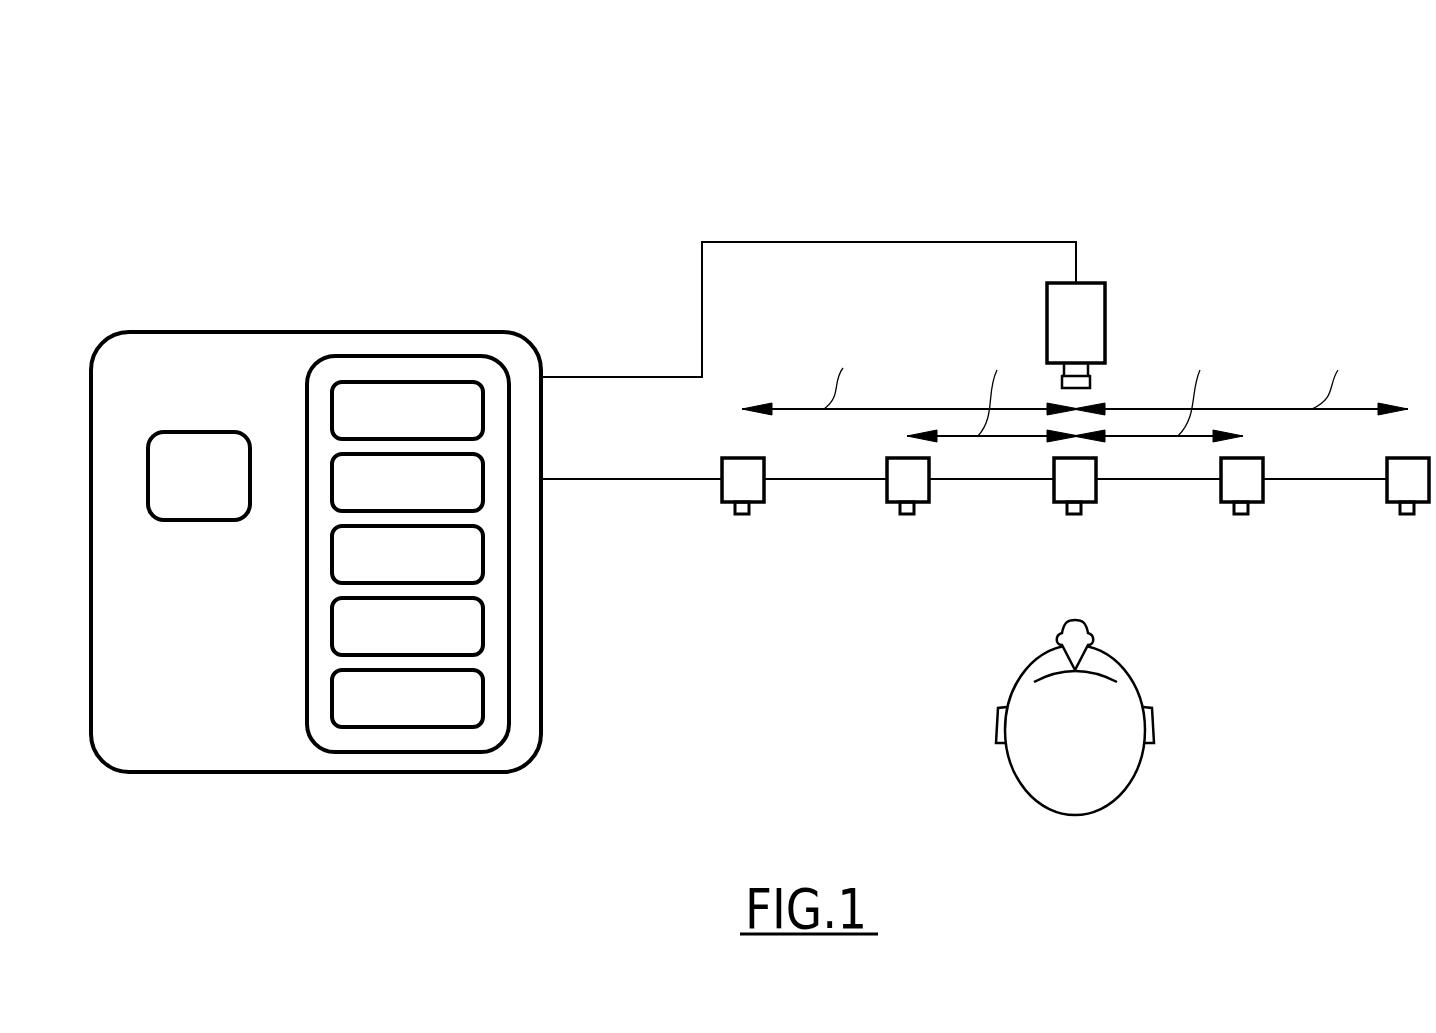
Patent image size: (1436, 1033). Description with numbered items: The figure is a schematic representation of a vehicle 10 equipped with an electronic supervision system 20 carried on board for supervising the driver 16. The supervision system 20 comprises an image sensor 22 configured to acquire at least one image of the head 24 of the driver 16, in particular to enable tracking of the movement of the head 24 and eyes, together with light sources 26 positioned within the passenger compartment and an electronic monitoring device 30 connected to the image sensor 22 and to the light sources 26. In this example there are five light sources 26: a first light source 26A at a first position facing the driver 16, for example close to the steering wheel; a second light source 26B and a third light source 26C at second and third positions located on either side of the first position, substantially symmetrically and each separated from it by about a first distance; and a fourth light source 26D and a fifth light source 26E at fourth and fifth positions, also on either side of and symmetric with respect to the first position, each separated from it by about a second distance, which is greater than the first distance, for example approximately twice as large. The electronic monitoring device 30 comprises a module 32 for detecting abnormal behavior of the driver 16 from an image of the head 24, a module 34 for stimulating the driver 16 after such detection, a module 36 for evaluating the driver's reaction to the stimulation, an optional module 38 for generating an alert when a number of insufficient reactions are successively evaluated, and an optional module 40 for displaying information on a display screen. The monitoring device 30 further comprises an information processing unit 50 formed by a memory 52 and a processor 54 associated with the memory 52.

The vehicle 10 is at (1282, 128).
The driver 16 is at (1110, 840).
The electronic supervision system 20 is at (1306, 284).
The image sensor 22 is at (1083, 320).
The head 24 is at (1107, 762).
The light source 26 is at (1374, 527).
The first light source 26A is at (1066, 485).
The second light source 26B is at (900, 485).
The third light source 26C is at (1232, 485).
The fourth light source 26D is at (733, 485).
The fifth light source 26E is at (1398, 485).
The electronic monitoring device 30 is at (431, 291).
The module for detecting abnormal behavior 32 is at (424, 432).
The module for stimulating the driver 34 is at (424, 504).
The module for evaluating a reaction 36 is at (424, 576).
The module for generating an alert 38 is at (424, 648).
The module for displaying information 40 is at (424, 720).
The information processing unit 50 is at (265, 332).
The memory 52 is at (307, 645).
The processor 54 is at (184, 491).